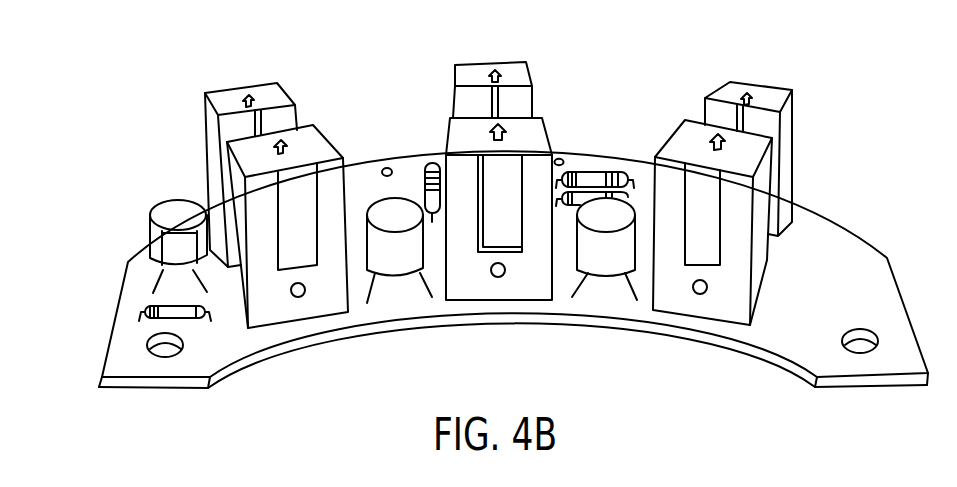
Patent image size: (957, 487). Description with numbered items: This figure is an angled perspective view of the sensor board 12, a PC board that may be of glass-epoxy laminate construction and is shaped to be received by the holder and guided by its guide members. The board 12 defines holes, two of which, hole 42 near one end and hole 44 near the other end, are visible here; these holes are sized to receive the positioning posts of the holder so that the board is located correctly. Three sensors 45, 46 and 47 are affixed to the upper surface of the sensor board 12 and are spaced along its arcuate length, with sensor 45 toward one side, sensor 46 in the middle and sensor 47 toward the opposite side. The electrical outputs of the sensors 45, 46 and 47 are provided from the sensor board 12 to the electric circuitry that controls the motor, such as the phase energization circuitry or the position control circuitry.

The sensor board 12 is at (127, 336).
The hole 42 is at (163, 347).
The hole 44 is at (862, 345).
The sensor 45 is at (230, 105).
The sensor 46 is at (478, 75).
The sensor 47 is at (737, 92).